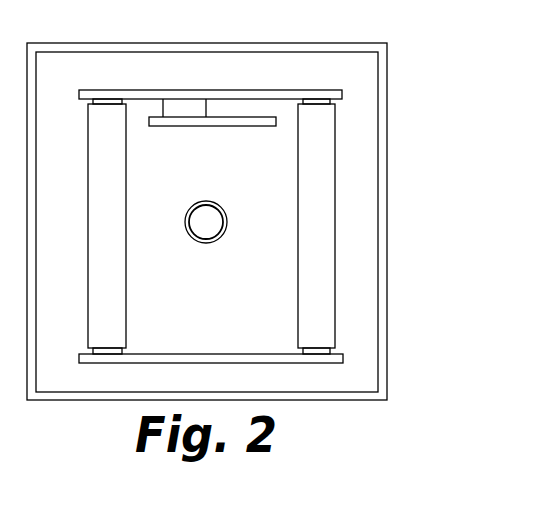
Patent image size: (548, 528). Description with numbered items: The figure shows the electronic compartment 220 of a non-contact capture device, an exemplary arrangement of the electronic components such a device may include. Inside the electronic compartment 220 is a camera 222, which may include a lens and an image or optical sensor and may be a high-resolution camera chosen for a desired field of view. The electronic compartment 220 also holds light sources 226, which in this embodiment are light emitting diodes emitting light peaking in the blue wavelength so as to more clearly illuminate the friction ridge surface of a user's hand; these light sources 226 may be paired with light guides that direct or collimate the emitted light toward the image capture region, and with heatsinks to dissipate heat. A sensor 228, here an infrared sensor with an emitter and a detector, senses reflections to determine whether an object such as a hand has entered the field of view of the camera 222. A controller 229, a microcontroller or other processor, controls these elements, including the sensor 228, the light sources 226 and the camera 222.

The electronic compartment 220 is at (362, 136).
The camera 222 is at (208, 225).
The light source 226 is at (107, 101).
The IR sensor 228 is at (184, 106).
The controller 229 is at (252, 118).